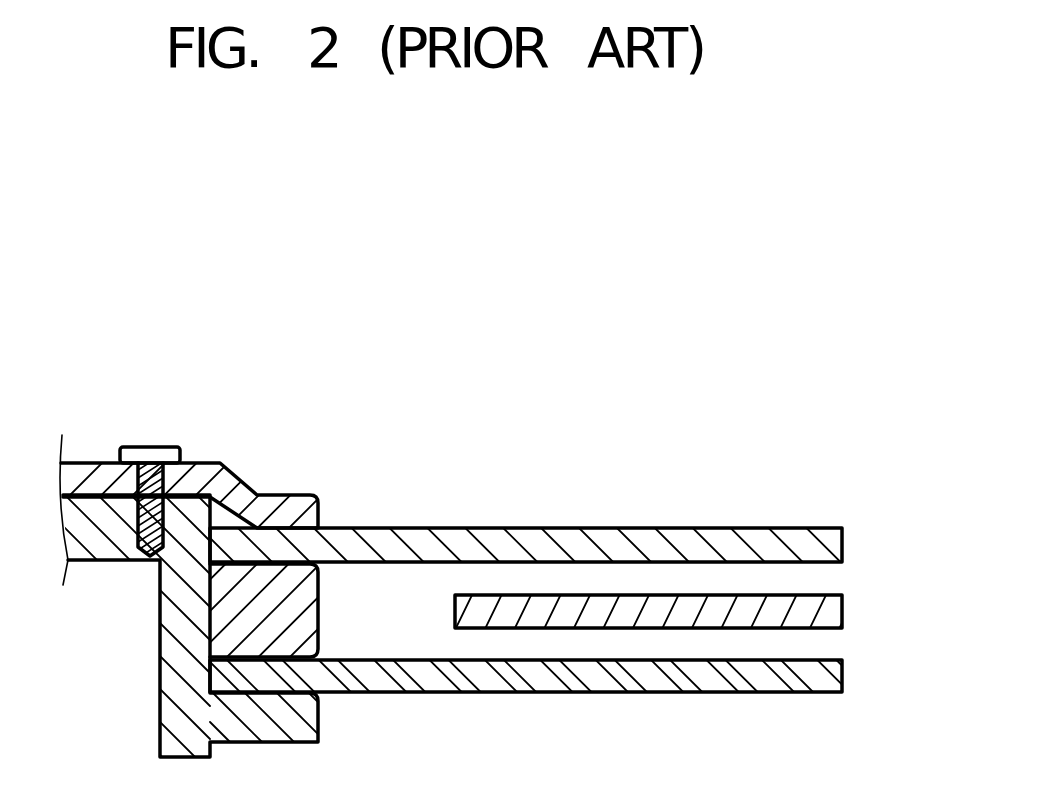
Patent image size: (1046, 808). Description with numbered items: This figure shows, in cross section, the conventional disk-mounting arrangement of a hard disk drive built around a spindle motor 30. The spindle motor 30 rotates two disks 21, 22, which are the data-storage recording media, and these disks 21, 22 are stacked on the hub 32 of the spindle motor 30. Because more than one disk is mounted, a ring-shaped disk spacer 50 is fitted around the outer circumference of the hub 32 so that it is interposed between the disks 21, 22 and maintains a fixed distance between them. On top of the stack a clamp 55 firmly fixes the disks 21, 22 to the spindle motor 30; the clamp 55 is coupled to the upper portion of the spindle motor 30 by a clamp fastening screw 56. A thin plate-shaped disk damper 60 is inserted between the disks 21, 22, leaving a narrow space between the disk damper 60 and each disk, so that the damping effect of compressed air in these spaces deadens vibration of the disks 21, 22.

The disk 21 is at (661, 680).
The disk 22 is at (667, 545).
The spindle motor 30 is at (148, 670).
The hub 32 is at (182, 612).
The disk spacer 50 is at (318, 617).
The clamp 55 is at (214, 480).
The clamp fastening screw 56 is at (149, 455).
The disk damper 60 is at (830, 614).